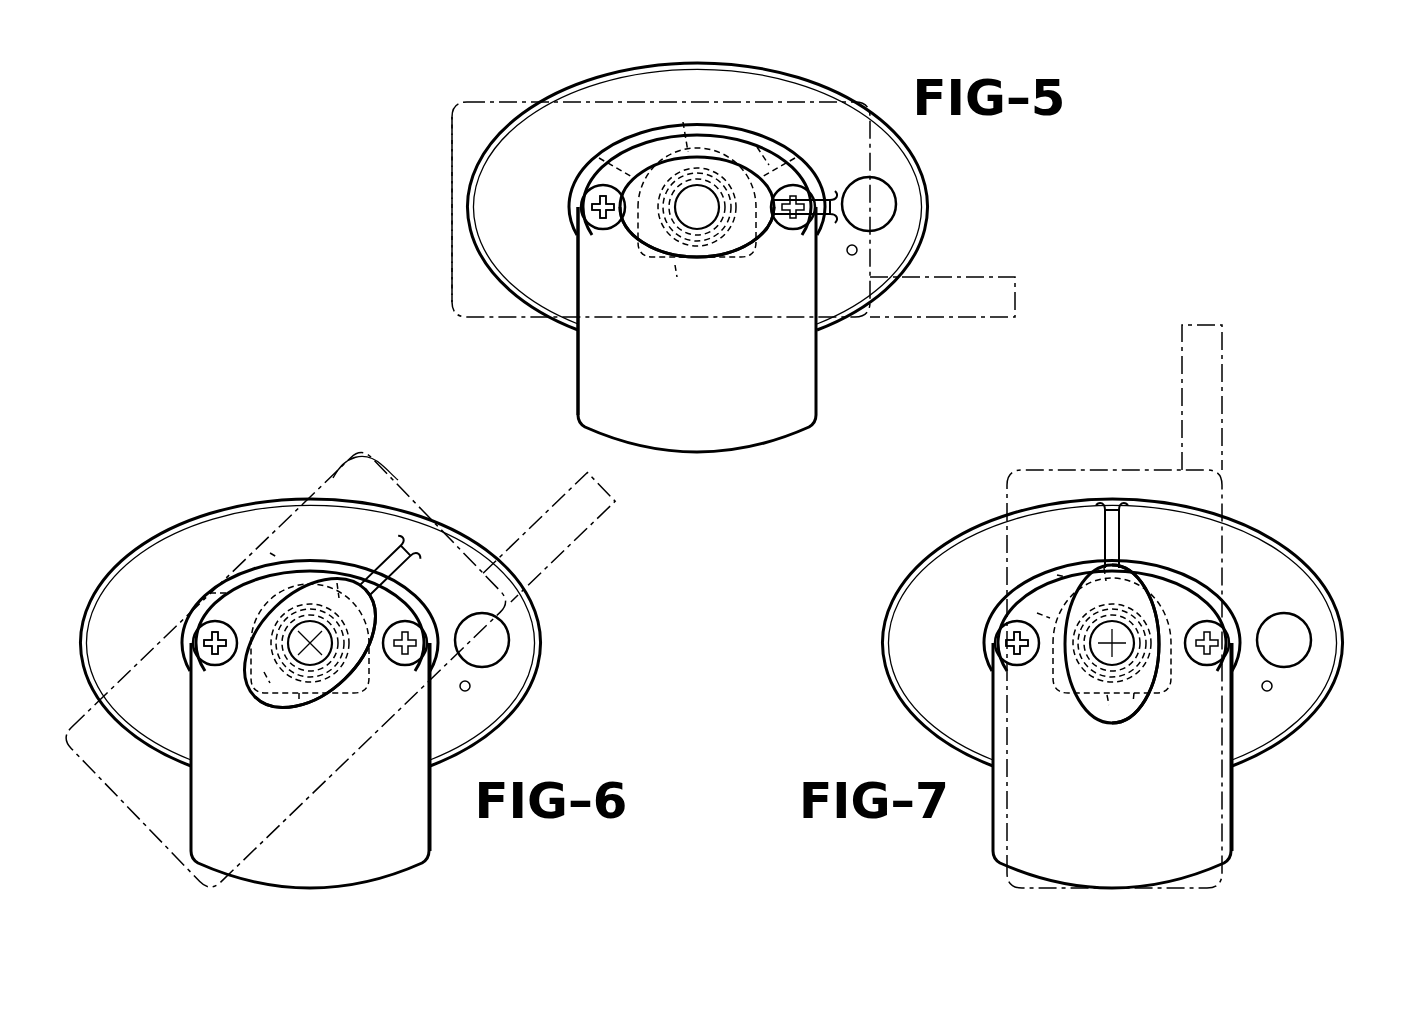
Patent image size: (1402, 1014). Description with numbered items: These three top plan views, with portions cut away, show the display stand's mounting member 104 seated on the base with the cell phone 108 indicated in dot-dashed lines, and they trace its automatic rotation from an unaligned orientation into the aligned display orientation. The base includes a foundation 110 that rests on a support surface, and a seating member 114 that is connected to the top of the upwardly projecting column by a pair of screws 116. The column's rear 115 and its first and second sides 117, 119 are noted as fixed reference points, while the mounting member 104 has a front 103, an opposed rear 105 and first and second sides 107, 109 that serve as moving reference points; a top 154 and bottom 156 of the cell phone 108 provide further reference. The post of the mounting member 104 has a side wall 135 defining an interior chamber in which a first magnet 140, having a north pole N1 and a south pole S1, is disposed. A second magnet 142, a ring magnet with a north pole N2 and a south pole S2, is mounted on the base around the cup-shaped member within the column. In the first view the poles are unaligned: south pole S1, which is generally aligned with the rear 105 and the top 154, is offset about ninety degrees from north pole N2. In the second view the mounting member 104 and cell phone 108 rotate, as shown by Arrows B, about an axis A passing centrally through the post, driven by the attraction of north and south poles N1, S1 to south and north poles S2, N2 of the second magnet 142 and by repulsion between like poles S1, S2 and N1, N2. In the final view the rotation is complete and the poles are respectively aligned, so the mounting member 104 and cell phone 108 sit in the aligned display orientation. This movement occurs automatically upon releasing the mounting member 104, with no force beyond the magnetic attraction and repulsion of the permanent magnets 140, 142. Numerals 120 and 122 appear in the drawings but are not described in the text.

In FIG. 5, the front 103 is at (580, 234).
In FIG. 6, the front 103 is at (283, 667).
In FIG. 7, the front 103 is at (1102, 703).
In FIG. 5, the mounting member 104 is at (628, 247).
In FIG. 6, the mounting member 104 is at (273, 597).
In FIG. 7, the mounting member 104 is at (1078, 717).
In FIG. 5, the rear 105 is at (777, 212).
In FIG. 6, the rear 105 is at (380, 550).
In FIG. 7, the rear 105 is at (1120, 562).
In FIG. 5, the first side 107 is at (627, 136).
In FIG. 6, the first side 107 is at (250, 613).
In FIG. 7, the first side 107 is at (1060, 643).
In FIG. 5, the cell phone 108 is at (452, 146).
In FIG. 6, the cell phone 108 is at (333, 467).
In FIG. 7, the cell phone 108 is at (1002, 491).
In FIG. 5, the second side 109 is at (698, 255).
In FIG. 6, the second side 109 is at (335, 662).
In FIG. 7, the second side 109 is at (1140, 655).
In FIG. 5, the foundation 110 is at (925, 205).
In FIG. 6, the foundation 110 is at (517, 710).
In FIG. 7, the foundation 110 is at (1266, 760).
In FIG. 5, the seating member 114 is at (723, 140).
In FIG. 6, the seating member 114 is at (421, 604).
In FIG. 7, the seating member 114 is at (1198, 592).
In FIG. 5, the rear 115 is at (695, 137).
In FIG. 6, the rear 115 is at (299, 577).
In FIG. 7, the rear 115 is at (1087, 625).
In FIG. 5, the screws 116 is at (600, 192).
In FIG. 6, the screws 116 is at (216, 666).
In FIG. 7, the screws 116 is at (998, 641).
In FIG. 5, the first side 117 is at (580, 205).
In FIG. 6, the first side 117 is at (192, 640).
In FIG. 7, the first side 117 is at (997, 648).
In FIG. 5, the second side 119 is at (795, 188).
In FIG. 6, the second side 119 is at (432, 643).
In FIG. 7, the second side 119 is at (1232, 645).
In FIG. 5, the housing body 120 is at (795, 372).
In FIG. 6, the housing body 120 is at (382, 853).
In FIG. 7, the housing body 120 is at (1190, 820).
In FIG. 5, the side wall 122 is at (578, 366).
In FIG. 6, the side wall 122 is at (432, 848).
In FIG. 7, the side wall 122 is at (1234, 818).
In FIG. 5, the side wall 135 is at (737, 222).
In FIG. 5, the first magnet 140 is at (714, 226).
In FIG. 6, the first magnet 140 is at (345, 658).
In FIG. 7, the first magnet 140 is at (1145, 660).
In FIG. 5, the second magnet 142 is at (757, 145).
In FIG. 6, the second magnet 142 is at (235, 590).
In FIG. 7, the second magnet 142 is at (1055, 620).
In FIG. 5, the top 154 is at (875, 258).
In FIG. 6, the top 154 is at (390, 467).
In FIG. 7, the top 154 is at (1085, 466).
In FIG. 5, the bottom 156 is at (452, 205).
In FIG. 5, the north pole N1 is at (655, 197).
In FIG. 6, the north pole N1 is at (265, 672).
In FIG. 7, the north pole N1 is at (1133, 700).
In FIG. 5, the north pole N2 is at (688, 150).
In FIG. 6, the north pole N2 is at (278, 557).
In FIG. 7, the north pole N2 is at (1105, 583).
In FIG. 5, the south pole S1 is at (738, 196).
In FIG. 6, the south pole S1 is at (330, 617).
In FIG. 7, the south pole S1 is at (1068, 575).
In FIG. 5, the south pole S2 is at (675, 265).
In FIG. 6, the south pole S2 is at (300, 700).
In FIG. 7, the south pole S2 is at (1110, 695).
In FIG. 6, the axis A is at (308, 660).
In FIG. 7, the axis A is at (1110, 650).
In FIG. 6, the Arrows B is at (442, 438).